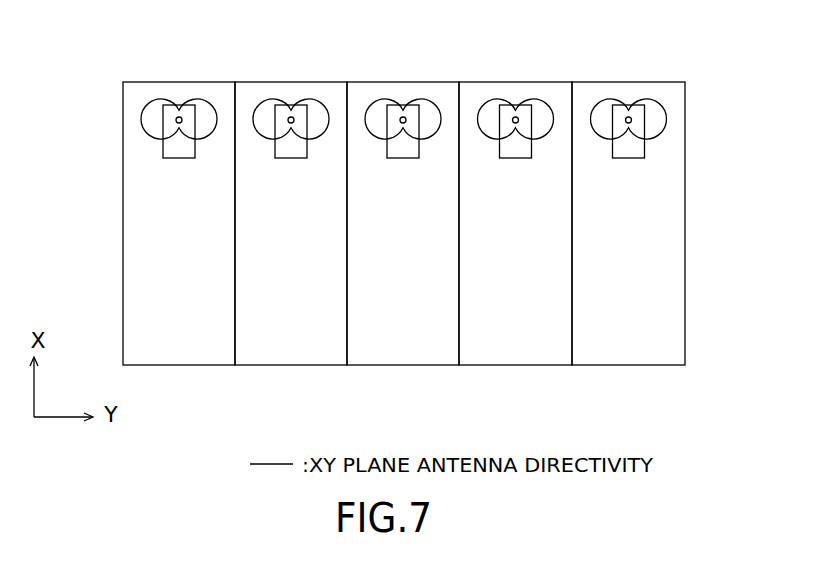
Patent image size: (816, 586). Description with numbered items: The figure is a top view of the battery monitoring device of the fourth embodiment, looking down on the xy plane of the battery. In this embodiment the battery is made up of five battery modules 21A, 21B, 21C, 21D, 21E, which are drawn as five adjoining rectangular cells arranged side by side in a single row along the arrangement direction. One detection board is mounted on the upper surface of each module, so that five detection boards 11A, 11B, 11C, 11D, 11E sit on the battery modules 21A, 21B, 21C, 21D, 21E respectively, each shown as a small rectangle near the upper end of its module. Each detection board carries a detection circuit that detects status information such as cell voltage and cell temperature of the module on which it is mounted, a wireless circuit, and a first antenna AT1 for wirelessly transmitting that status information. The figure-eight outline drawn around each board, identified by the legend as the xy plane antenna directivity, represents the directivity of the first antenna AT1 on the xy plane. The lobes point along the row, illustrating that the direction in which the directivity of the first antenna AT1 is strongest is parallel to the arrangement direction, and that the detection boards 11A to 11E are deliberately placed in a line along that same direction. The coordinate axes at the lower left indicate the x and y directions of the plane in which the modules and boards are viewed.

The first antenna AT1 is at (179, 110).
The detection board 11A is at (631, 147).
The detection board 11B is at (518, 147).
The detection board 11C is at (406, 147).
The detection board 11D is at (294, 147).
The detection board 11E is at (182, 147).
The battery module 21A is at (629, 350).
The battery module 21B is at (516, 350).
The battery module 21C is at (404, 350).
The battery module 21D is at (292, 350).
The battery module 21E is at (180, 350).